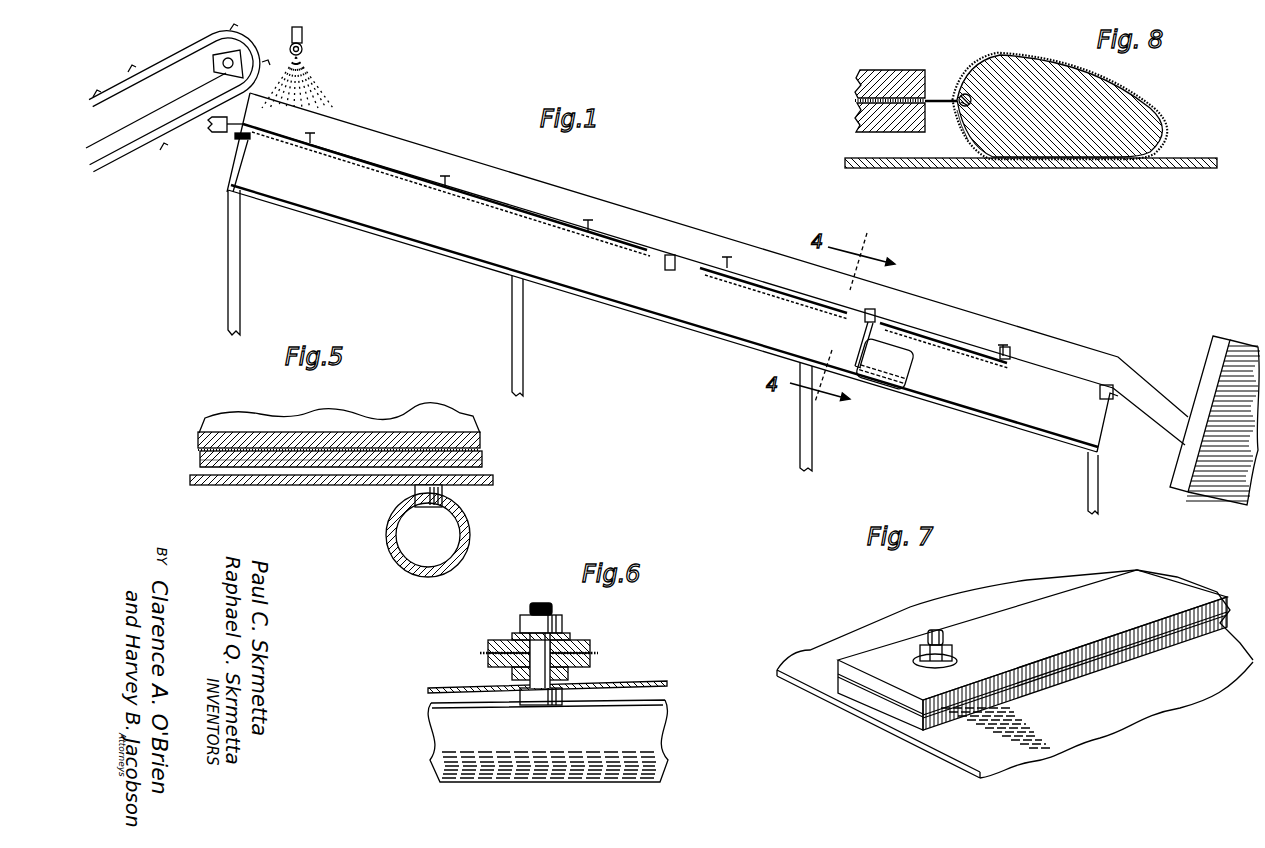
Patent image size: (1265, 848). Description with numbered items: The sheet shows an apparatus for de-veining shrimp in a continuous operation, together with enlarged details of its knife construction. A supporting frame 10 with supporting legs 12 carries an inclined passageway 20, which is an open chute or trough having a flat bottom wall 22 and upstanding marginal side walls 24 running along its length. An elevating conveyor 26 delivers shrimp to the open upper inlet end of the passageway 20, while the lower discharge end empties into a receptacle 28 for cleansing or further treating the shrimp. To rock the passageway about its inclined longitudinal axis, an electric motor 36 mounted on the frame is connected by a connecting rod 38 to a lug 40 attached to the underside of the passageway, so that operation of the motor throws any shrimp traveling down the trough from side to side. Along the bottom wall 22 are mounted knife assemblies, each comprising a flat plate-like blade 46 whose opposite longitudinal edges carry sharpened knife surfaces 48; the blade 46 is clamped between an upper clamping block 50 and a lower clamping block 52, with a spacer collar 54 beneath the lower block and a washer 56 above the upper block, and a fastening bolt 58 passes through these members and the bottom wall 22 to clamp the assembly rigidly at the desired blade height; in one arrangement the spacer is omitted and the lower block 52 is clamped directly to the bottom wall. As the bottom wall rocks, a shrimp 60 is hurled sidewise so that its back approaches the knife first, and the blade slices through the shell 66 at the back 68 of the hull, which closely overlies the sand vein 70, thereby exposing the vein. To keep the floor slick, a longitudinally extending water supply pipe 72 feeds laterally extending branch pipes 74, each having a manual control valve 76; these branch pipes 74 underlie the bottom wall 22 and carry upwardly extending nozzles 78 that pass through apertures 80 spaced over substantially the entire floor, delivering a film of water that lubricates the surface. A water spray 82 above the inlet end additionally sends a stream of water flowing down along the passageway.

In FIG. 1, the supporting frame 10 is at (419, 259).
In FIG. 1, the supporting legs 12 is at (520, 343).
In FIG. 1, the passageway 20 is at (668, 205).
In FIG. 5, the bottom wall 22 is at (343, 483).
In FIG. 6, the bottom wall 22 is at (643, 680).
In FIG. 7, the bottom wall 22 is at (797, 667).
In FIG. 8, the bottom wall 22 is at (1180, 163).
In FIG. 1, the marginal side walls 24 is at (565, 203).
In FIG. 1, the elevating conveyor 26 is at (121, 81).
In FIG. 1, the receptacle 28 is at (1236, 326).
In FIG. 1, the electric motor 36 is at (900, 372).
In FIG. 1, the connecting rod 38 is at (858, 328).
In FIG. 1, the lug 40 is at (875, 313).
In FIG. 5, the blade 46 is at (337, 442).
In FIG. 6, the blade 46 is at (498, 643).
In FIG. 7, the blade 46 is at (875, 692).
In FIG. 8, the blade 46 is at (888, 100).
In FIG. 6, the knife surfaces 48 is at (604, 650).
In FIG. 7, the knife surfaces 48 is at (835, 673).
In FIG. 8, the knife surfaces 48 is at (938, 105).
In FIG. 5, the upper clamping block 50 is at (402, 437).
In FIG. 6, the upper clamping block 50 is at (580, 642).
In FIG. 7, the upper clamping block 50 is at (875, 663).
In FIG. 8, the upper clamping block 50 is at (868, 85).
In FIG. 5, the lower clamping block 52 is at (308, 458).
In FIG. 6, the lower clamping block 52 is at (592, 663).
In FIG. 7, the lower clamping block 52 is at (893, 708).
In FIG. 8, the lower clamping block 52 is at (887, 117).
In FIG. 6, the spacer collar 54 is at (522, 672).
In FIG. 6, the washer 56 is at (517, 633).
In FIG. 7, the washer 56 is at (957, 660).
In FIG. 6, the fastening bolt 58 is at (548, 675).
In FIG. 7, the fastening bolt 58 is at (945, 635).
In FIG. 8, the shrimp 60 is at (1097, 107).
In FIG. 8, the shell 66 is at (1003, 55).
In FIG. 8, the back 68 is at (957, 125).
In FIG. 8, the sand vein 70 is at (963, 94).
In FIG. 1, the water supply pipe 72 is at (760, 283).
In FIG. 5, the branch pipes 74 is at (463, 535).
In FIG. 6, the branch pipes 74 is at (607, 755).
In FIG. 1, the manual control valve 76 is at (448, 183).
In FIG. 5, the nozzles 78 is at (440, 495).
In FIG. 5, the apertures 80 is at (413, 477).
In FIG. 1, the water spray 82 is at (303, 38).